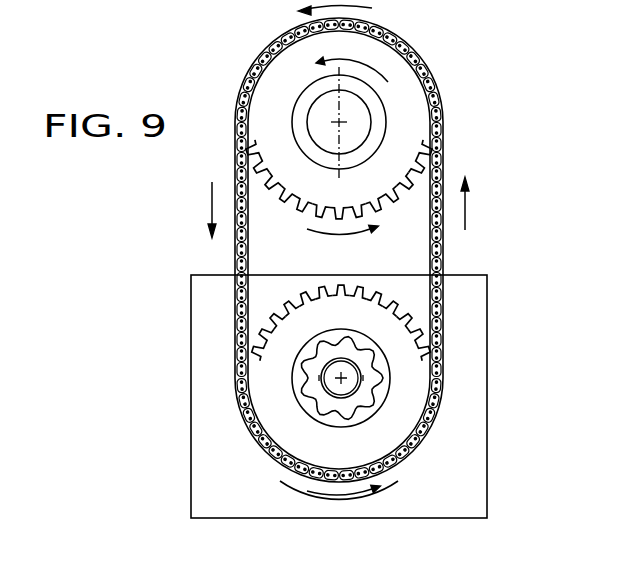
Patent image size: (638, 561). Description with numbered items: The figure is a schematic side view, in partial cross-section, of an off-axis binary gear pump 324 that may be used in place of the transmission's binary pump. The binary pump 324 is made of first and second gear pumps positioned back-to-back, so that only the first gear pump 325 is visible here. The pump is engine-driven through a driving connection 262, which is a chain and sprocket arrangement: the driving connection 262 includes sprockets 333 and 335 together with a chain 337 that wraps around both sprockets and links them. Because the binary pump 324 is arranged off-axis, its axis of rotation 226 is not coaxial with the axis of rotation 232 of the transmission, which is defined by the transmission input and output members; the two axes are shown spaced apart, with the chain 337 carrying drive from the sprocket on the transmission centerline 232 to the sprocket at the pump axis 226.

The axis of rotation of the transmission 232 is at (339, 122).
The driving connection 262 is at (462, 148).
The sprocket 333 is at (405, 186).
The chain 337 is at (446, 265).
The sprocket 335 is at (442, 322).
The first gear pump 325 is at (284, 387).
The axis of rotation of the pump 226 is at (341, 378).
The binary pump 324 is at (286, 485).